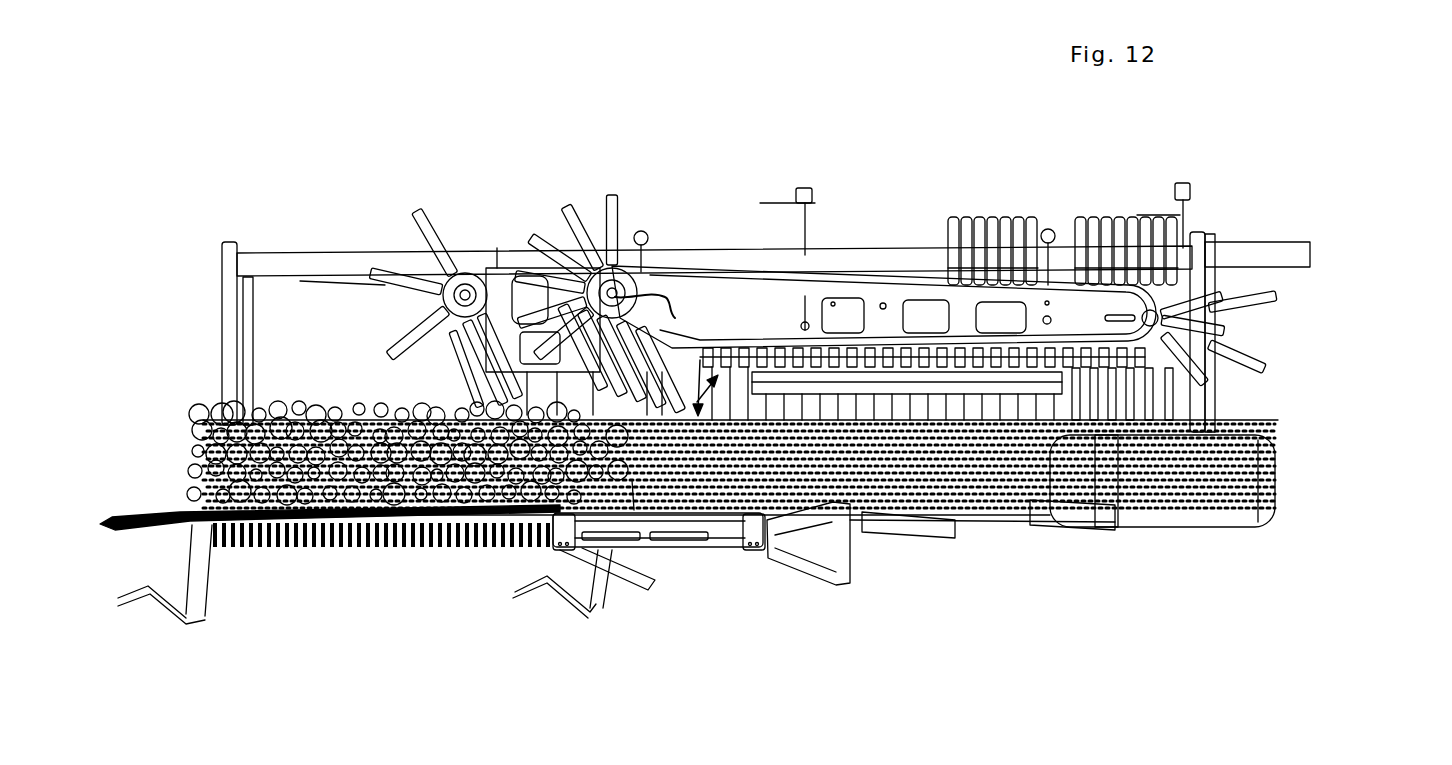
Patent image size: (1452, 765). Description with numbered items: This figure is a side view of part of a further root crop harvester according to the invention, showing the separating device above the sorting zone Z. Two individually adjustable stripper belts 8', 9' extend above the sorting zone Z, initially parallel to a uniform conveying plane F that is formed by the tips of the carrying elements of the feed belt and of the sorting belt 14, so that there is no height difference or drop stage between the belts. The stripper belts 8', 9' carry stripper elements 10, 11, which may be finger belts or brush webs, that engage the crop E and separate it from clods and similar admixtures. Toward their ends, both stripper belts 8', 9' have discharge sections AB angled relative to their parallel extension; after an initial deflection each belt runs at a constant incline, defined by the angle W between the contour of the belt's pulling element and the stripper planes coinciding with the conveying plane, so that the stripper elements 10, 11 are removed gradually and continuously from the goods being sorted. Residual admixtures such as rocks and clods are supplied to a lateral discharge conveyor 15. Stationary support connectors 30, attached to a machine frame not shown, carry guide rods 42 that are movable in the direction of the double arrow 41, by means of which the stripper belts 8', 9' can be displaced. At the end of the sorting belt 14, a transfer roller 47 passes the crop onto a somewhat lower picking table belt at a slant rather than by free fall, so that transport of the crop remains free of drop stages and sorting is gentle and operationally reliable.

The stripper belt 8' is at (892, 281).
The stripper belt 9' is at (801, 349).
The stripper element 10 is at (607, 197).
The stripper element 11 is at (423, 206).
The sorting belt 14 is at (198, 448).
The lateral discharge conveyor 15 is at (848, 553).
The support connector 30 is at (232, 330).
The double arrow 41 is at (920, 213).
The guide rod 42 is at (1276, 252).
The transfer roller 47 is at (624, 480).
The discharge section AB is at (666, 286).
The angle W is at (700, 362).
The crop E is at (283, 392).
The conveying plane F is at (200, 429).
The sorting zone Z is at (1218, 440).